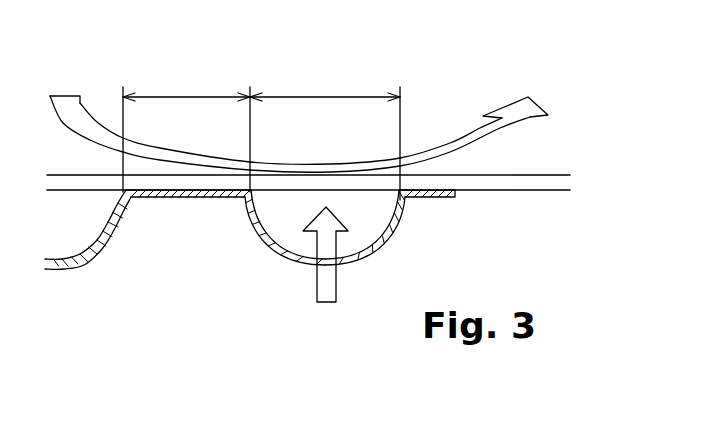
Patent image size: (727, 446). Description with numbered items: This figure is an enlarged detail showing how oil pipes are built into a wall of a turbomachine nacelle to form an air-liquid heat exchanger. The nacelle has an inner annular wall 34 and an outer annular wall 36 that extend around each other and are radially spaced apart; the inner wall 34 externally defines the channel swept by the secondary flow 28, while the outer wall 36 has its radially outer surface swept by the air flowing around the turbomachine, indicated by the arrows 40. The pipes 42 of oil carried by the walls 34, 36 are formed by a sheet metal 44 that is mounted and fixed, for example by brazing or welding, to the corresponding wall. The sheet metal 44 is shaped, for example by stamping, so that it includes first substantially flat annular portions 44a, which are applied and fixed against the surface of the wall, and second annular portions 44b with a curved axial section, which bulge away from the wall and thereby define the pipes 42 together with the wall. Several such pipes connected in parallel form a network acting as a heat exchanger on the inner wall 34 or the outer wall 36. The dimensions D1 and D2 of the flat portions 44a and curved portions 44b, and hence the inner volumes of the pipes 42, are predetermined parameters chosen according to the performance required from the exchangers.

The secondary flow 28 is at (299, 92).
The arrows 40 is at (65, 96).
The dimension of the flat portion D1 is at (186, 97).
The dimension of the curved portion D2 is at (326, 97).
The inner annular wall 34 is at (317, 215).
The outer annular wall 36 is at (533, 188).
The pipes 42 is at (225, 265).
The sheet metal 44 is at (261, 265).
The first substantially flat annular portions 44a is at (177, 198).
The second annular portions with curved axial section 44b is at (98, 247).